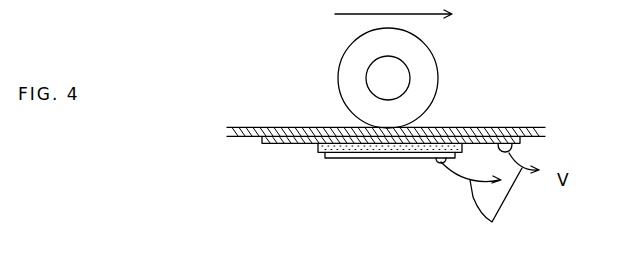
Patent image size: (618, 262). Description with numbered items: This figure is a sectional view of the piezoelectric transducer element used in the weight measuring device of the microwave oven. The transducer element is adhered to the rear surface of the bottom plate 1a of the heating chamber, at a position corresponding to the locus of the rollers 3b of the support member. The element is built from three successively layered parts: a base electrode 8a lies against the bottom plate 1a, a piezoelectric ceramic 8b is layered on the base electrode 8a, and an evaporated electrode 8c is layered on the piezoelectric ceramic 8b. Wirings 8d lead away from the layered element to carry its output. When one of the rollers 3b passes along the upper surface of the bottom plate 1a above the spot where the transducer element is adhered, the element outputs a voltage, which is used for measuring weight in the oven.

The bottom plate 1a is at (242, 125).
The roller 3b is at (367, 62).
The base electrode 8a is at (283, 150).
The piezoelectric ceramic 8b is at (337, 157).
The evaporated electrode 8c is at (412, 158).
The wirings 8d is at (490, 199).